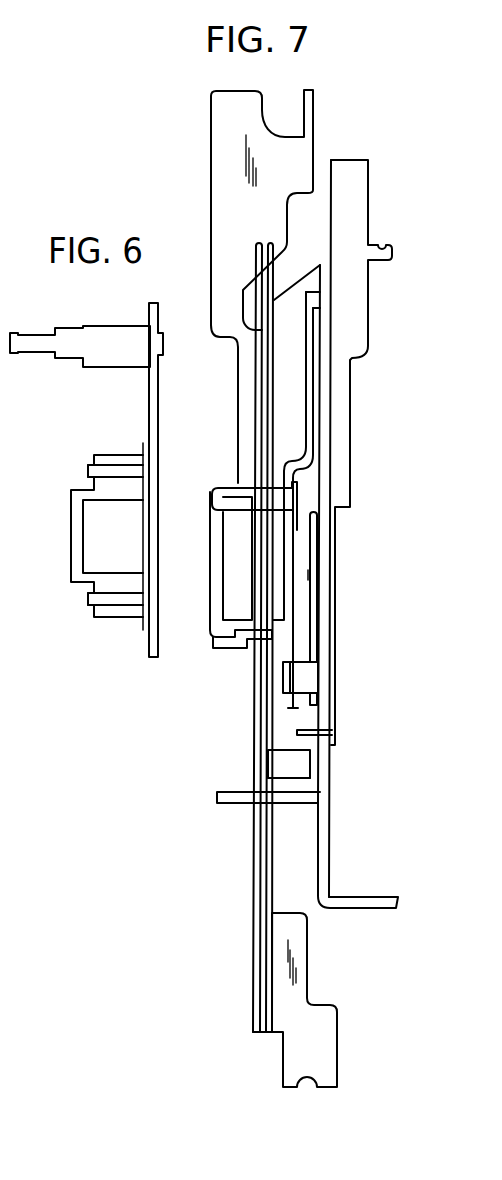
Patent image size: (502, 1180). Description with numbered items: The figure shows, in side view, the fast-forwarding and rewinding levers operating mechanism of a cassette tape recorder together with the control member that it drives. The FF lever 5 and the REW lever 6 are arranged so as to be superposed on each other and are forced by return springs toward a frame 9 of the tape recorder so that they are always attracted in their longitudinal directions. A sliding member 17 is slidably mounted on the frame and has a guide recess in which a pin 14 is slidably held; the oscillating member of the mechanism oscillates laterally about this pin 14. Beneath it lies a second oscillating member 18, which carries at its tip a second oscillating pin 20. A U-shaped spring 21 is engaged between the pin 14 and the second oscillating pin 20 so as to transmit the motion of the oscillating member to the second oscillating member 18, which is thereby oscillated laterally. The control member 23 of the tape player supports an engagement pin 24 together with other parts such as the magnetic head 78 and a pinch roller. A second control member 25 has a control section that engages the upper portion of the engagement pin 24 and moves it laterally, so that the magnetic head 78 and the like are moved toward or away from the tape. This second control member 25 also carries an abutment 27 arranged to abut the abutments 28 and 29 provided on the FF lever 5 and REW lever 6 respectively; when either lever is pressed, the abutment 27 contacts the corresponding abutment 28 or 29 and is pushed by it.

In FIG. 7, the FF lever 5 is at (283, 1055).
In FIG. 7, the REW lever 6 is at (253, 1018).
In FIG. 7, the frame 9 is at (329, 850).
In FIG. 7, the pin 14 is at (222, 489).
In FIG. 7, the sliding member 17 is at (222, 157).
In FIG. 7, the second oscillating member 18 is at (313, 612).
In FIG. 7, the second oscillating pin 20 is at (283, 676).
In FIG. 7, the U-shaped spring 21 is at (295, 651).
In FIG. 6, the control member 23 is at (147, 410).
In FIG. 6, the engagement pin 24 is at (33, 350).
In FIG. 7, the second control member 25 is at (350, 418).
In FIG. 7, the abutment 27 is at (307, 736).
In FIG. 7, the abutment 28 is at (272, 768).
In FIG. 7, the abutment 29 is at (255, 772).
In FIG. 6, the magnetic head 78 is at (71, 520).